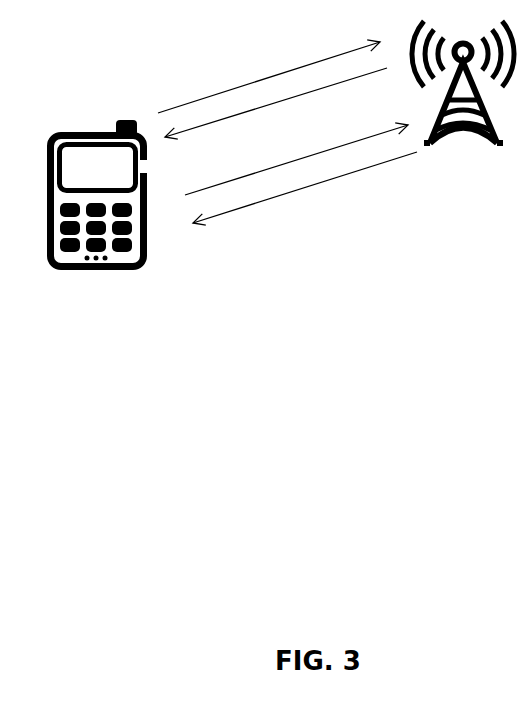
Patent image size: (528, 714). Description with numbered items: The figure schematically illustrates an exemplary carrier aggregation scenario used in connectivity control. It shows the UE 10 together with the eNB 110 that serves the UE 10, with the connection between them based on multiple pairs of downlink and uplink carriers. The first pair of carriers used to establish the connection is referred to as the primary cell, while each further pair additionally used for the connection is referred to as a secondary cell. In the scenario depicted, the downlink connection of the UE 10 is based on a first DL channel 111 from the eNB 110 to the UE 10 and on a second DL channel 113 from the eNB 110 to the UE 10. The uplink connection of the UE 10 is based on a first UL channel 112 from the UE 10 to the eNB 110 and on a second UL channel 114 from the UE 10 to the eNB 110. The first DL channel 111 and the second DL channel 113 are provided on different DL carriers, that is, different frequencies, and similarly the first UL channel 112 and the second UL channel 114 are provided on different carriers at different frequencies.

The UE 10 is at (83, 271).
The eNB 110 is at (488, 144).
The first DL channel 111 is at (340, 177).
The first UL channel 112 is at (340, 145).
The second DL channel 113 is at (242, 115).
The second UL channel 114 is at (243, 85).